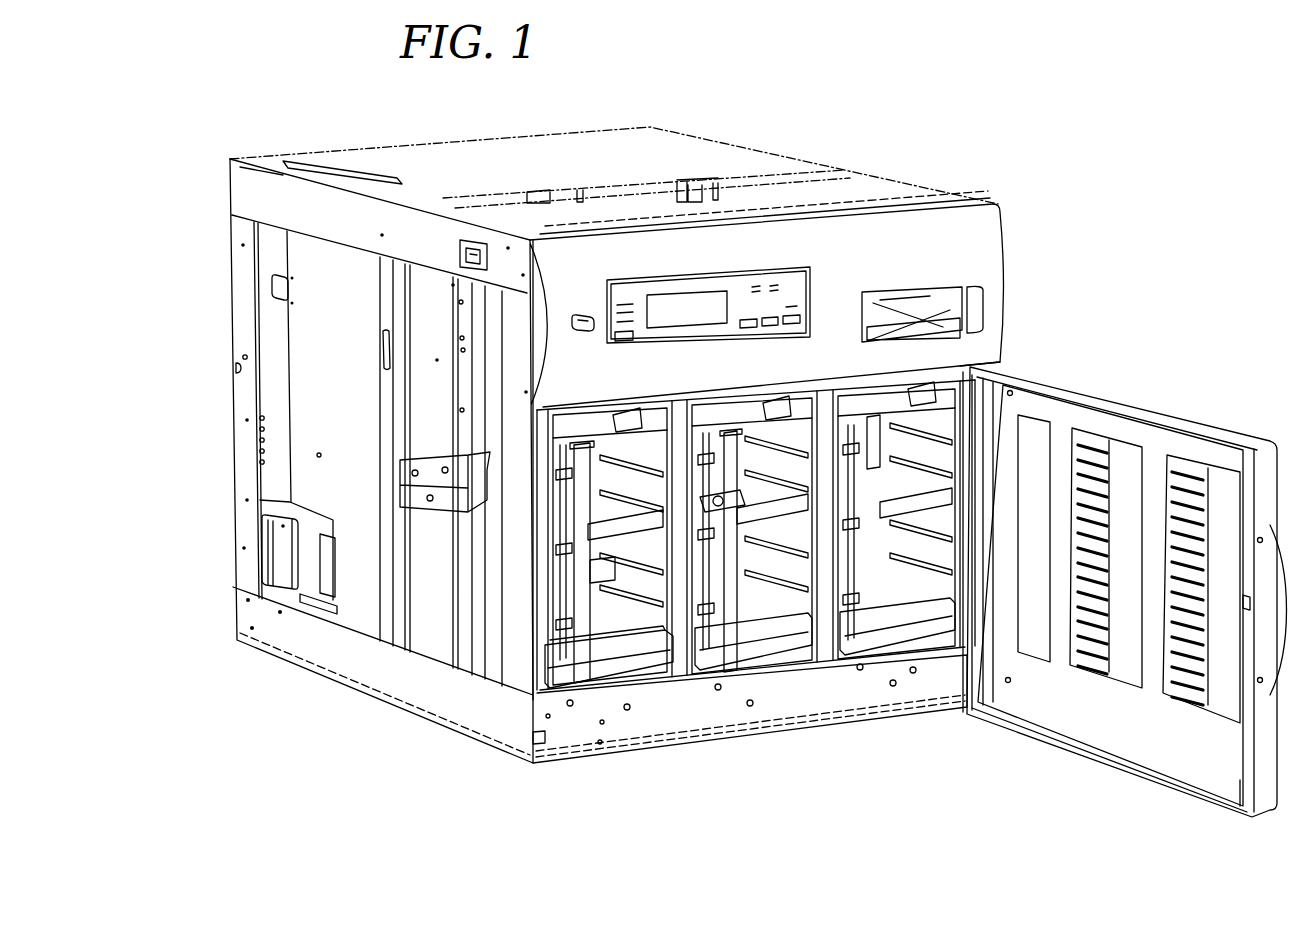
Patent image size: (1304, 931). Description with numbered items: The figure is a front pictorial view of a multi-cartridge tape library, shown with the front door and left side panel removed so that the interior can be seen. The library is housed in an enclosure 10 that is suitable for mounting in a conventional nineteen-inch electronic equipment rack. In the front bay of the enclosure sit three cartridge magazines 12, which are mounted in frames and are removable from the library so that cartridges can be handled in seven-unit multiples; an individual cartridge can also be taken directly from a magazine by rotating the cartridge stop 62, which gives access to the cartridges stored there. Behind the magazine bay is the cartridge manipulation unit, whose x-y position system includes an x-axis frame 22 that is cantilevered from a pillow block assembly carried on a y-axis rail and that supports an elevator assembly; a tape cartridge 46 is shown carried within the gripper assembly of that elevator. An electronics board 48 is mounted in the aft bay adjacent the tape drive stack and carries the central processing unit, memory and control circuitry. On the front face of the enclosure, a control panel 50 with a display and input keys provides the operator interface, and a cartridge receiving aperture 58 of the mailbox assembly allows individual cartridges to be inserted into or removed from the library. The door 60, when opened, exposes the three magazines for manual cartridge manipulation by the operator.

The enclosure 10 is at (720, 143).
The cartridge magazines 12 is at (690, 638).
The x-axis frame 22 is at (437, 507).
The tape cartridge 46 is at (613, 657).
The electronics board 48 is at (308, 558).
The control panel 50 is at (797, 293).
The cartridge receiving aperture 58 is at (977, 308).
The door 60 is at (1160, 413).
The cartridge stop 62 is at (578, 633).